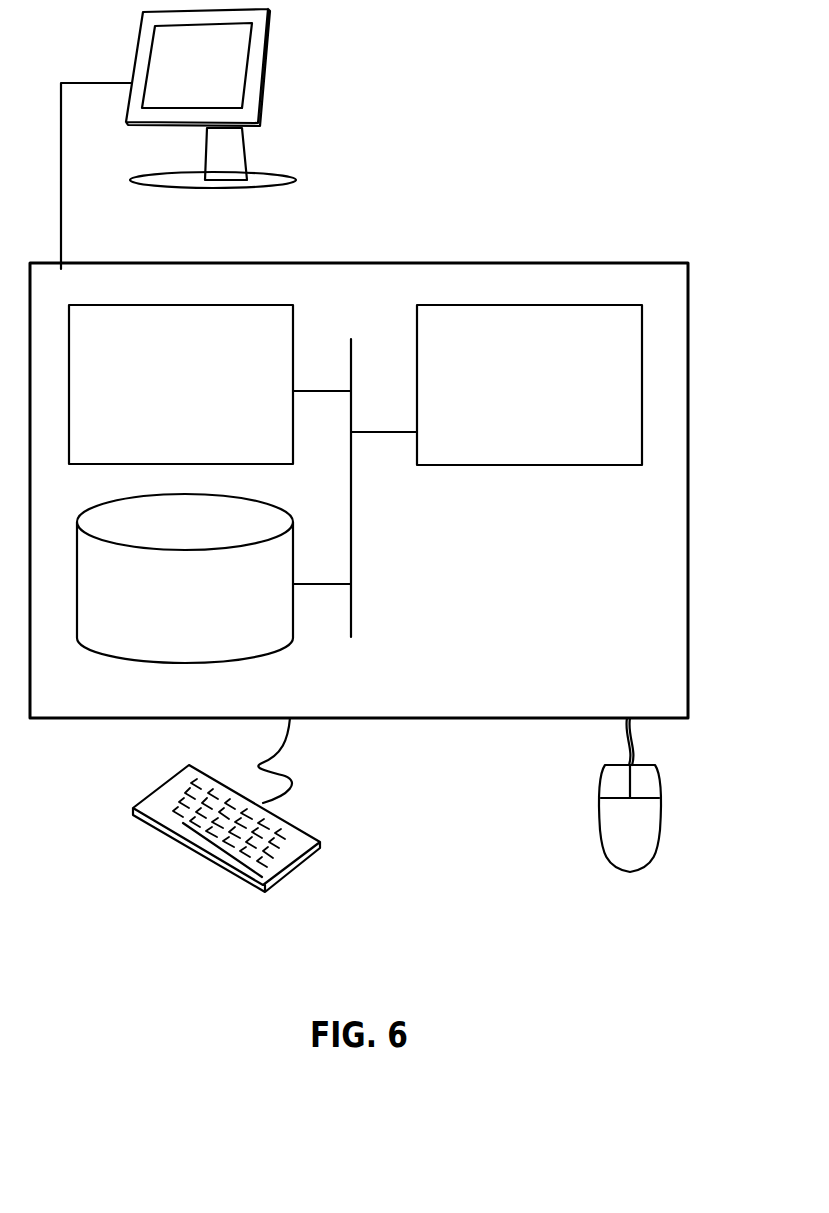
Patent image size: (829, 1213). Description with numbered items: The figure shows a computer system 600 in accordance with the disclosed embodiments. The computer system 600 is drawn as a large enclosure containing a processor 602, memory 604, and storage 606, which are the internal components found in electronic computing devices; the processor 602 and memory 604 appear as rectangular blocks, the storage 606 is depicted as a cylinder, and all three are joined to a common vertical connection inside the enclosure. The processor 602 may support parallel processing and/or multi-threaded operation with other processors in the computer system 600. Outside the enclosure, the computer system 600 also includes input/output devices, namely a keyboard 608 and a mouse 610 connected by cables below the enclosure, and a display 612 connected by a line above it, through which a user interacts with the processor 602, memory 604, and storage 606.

The computer system 600 is at (406, 242).
The processor 602 is at (511, 398).
The memory 604 is at (162, 398).
The storage 606 is at (166, 609).
The keyboard 608 is at (152, 828).
The mouse 610 is at (608, 840).
The display 612 is at (178, 139).